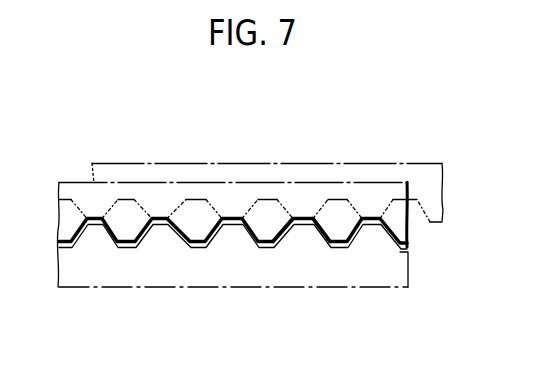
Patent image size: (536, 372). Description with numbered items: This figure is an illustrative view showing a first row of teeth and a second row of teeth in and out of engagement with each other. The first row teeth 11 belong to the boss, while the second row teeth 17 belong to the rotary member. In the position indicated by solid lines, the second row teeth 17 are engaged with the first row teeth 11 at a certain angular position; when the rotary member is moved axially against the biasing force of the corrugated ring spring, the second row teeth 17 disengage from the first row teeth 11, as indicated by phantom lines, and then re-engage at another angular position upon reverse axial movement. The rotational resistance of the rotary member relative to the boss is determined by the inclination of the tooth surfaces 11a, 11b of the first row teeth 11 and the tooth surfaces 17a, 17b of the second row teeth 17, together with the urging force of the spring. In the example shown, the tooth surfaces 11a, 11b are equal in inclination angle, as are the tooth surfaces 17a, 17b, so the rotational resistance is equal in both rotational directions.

The first row teeth 11 is at (302, 243).
The tooth surface 11a is at (283, 230).
The tooth surface 11b is at (323, 230).
The second row teeth 17 is at (268, 210).
The tooth surface 17a is at (146, 243).
The tooth surface 17b is at (106, 232).